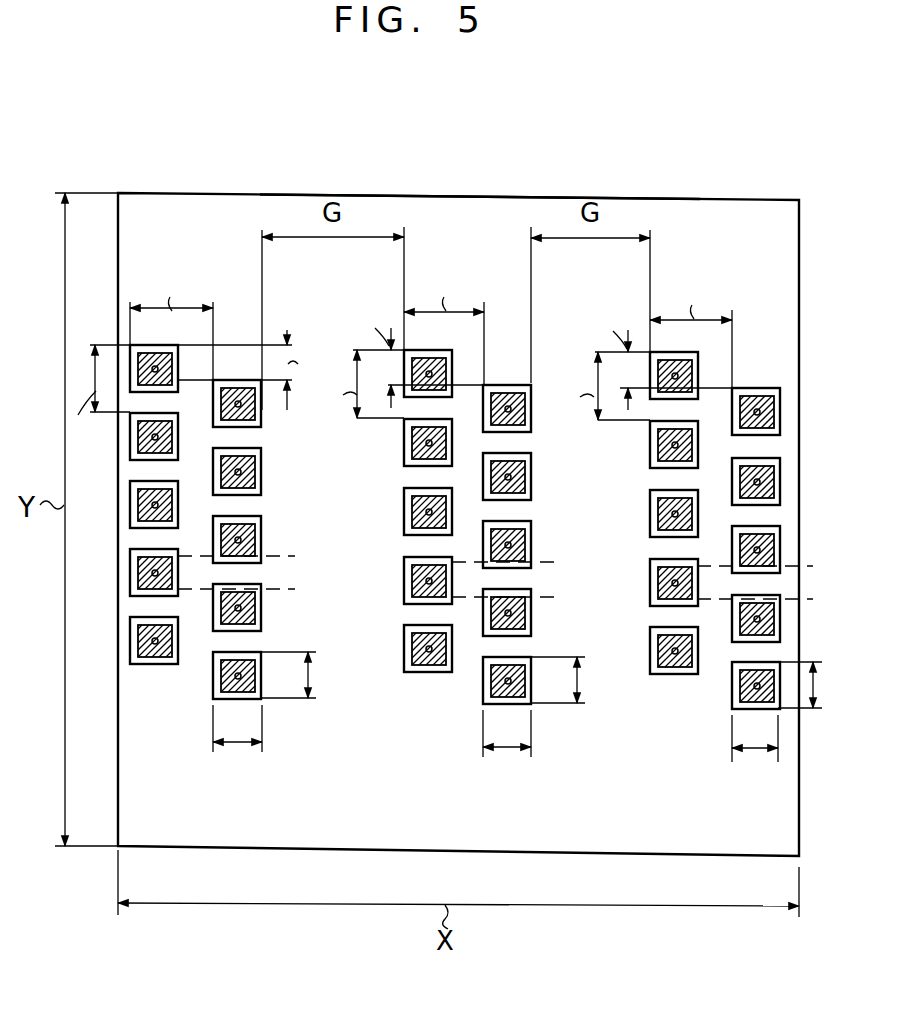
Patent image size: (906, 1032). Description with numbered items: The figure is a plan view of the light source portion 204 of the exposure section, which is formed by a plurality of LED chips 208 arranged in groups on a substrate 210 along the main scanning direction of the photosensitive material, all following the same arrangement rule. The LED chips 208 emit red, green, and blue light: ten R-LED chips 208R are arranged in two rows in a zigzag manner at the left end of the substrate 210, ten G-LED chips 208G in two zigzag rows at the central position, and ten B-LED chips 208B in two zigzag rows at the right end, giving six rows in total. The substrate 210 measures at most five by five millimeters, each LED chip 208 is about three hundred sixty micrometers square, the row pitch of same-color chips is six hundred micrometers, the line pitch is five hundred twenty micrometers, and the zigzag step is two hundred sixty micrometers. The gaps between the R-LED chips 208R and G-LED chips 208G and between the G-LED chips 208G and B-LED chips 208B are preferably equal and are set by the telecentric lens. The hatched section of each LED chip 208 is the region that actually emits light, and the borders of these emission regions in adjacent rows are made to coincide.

The light source portion 204 is at (236, 172).
The substrate 210 is at (543, 213).
The LED chips 208 is at (451, 556).
The R-LED chip 208R is at (262, 495).
The G-LED chip 208G is at (404, 600).
The B-LED chip 208B is at (696, 536).